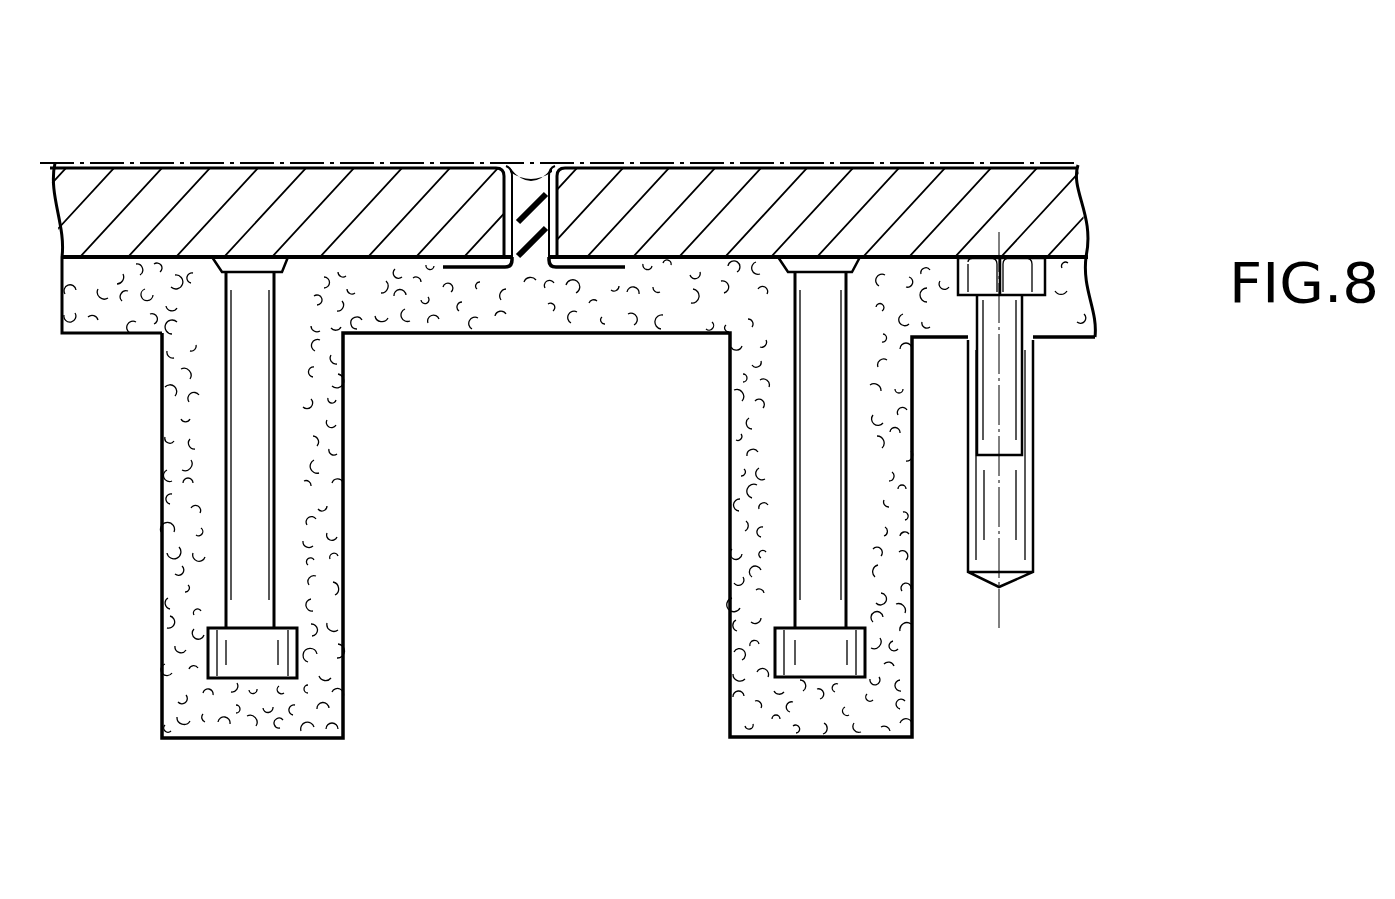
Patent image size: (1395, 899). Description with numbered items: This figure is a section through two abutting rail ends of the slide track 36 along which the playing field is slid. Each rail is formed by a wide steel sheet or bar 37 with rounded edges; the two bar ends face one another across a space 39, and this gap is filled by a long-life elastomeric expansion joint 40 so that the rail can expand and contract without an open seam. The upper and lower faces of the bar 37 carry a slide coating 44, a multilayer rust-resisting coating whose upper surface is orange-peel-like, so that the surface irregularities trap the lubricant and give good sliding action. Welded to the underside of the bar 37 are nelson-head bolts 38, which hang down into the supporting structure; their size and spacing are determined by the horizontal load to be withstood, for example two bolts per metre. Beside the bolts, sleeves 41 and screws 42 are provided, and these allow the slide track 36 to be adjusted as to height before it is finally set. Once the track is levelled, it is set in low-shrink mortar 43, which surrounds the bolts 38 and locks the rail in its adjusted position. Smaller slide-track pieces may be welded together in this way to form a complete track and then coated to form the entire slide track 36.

The slide track 36 is at (564, 192).
The wide steel sheet or bar 37 is at (752, 215).
The nelson-head bolts 38 is at (257, 557).
The space 39 is at (531, 135).
The elastomeric expansion joint 40 is at (538, 175).
The sleeves 41 is at (1010, 530).
The screws 42 is at (1008, 402).
The low-shrink mortar 43 is at (882, 700).
The slide coating 44 is at (892, 163).